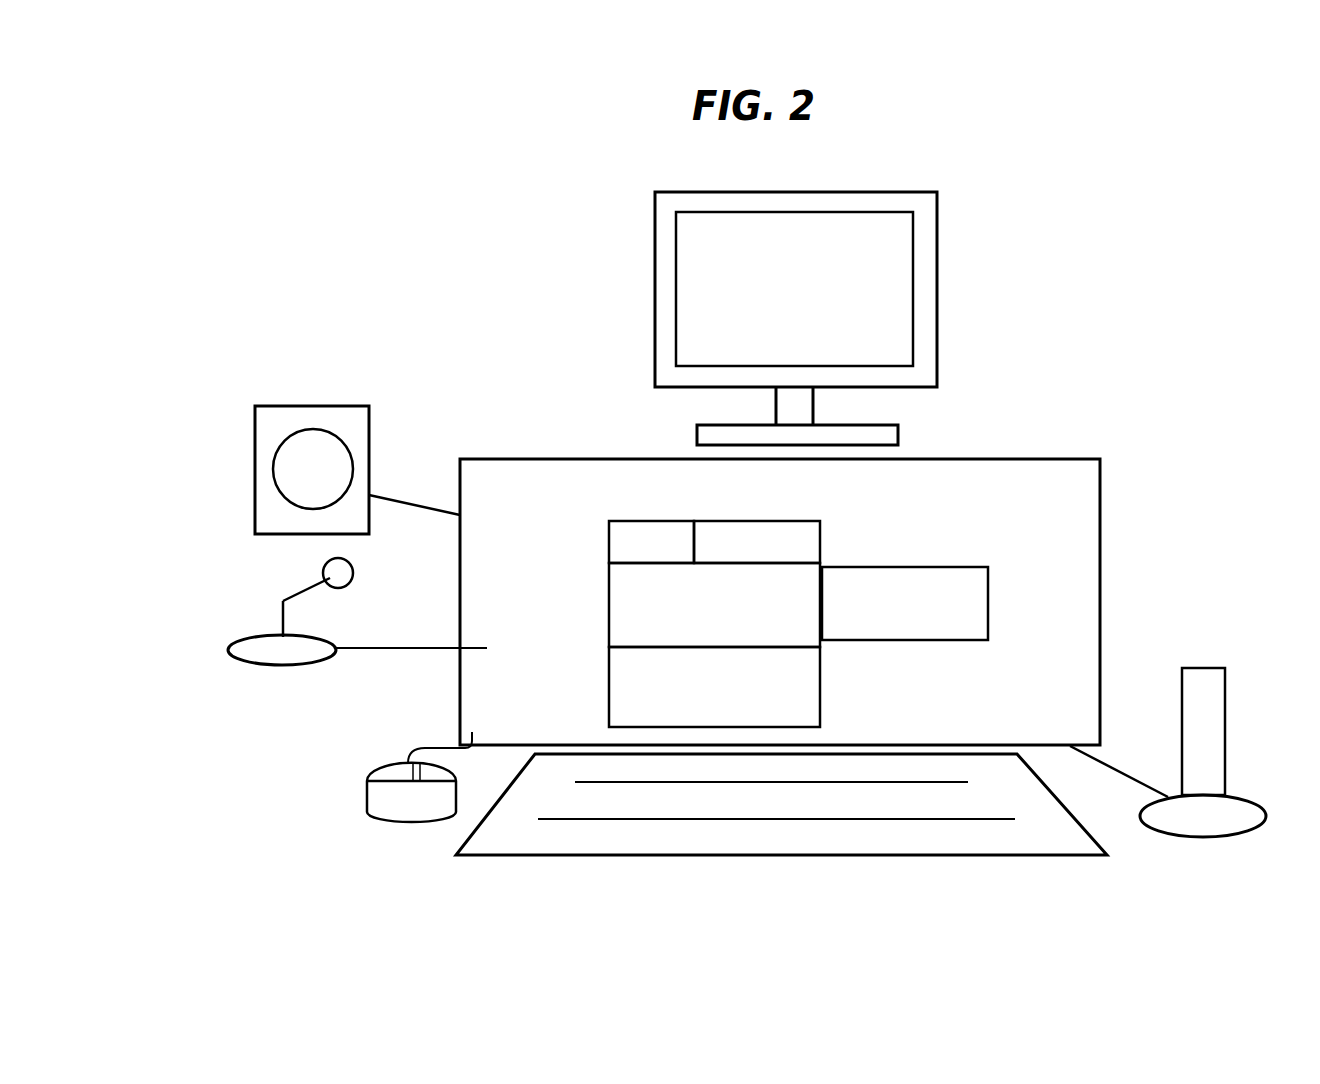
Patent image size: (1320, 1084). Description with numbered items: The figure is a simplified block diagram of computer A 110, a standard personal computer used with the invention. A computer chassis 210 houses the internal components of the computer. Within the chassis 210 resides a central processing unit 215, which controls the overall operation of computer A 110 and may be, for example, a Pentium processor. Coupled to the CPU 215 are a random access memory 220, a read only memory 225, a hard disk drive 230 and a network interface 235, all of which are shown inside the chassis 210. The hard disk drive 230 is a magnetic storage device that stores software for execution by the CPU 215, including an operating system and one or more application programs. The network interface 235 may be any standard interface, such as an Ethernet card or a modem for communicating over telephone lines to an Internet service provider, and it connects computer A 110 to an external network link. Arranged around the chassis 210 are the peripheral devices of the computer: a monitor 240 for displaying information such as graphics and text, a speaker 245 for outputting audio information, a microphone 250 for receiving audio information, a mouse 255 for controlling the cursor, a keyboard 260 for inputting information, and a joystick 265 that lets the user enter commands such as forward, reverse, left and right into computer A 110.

The computer A 110 is at (763, 965).
The computer chassis 210 is at (1100, 480).
The central processing unit 215 is at (609, 599).
The random access memory 220 is at (650, 521).
The read only memory 225 is at (743, 521).
The hard disk drive 230 is at (820, 685).
The network interface 235 is at (907, 565).
The monitor 240 is at (937, 218).
The speaker 245 is at (370, 429).
The microphone 250 is at (283, 601).
The mouse 255 is at (367, 788).
The keyboard 260 is at (533, 858).
The joystick 265 is at (1225, 707).